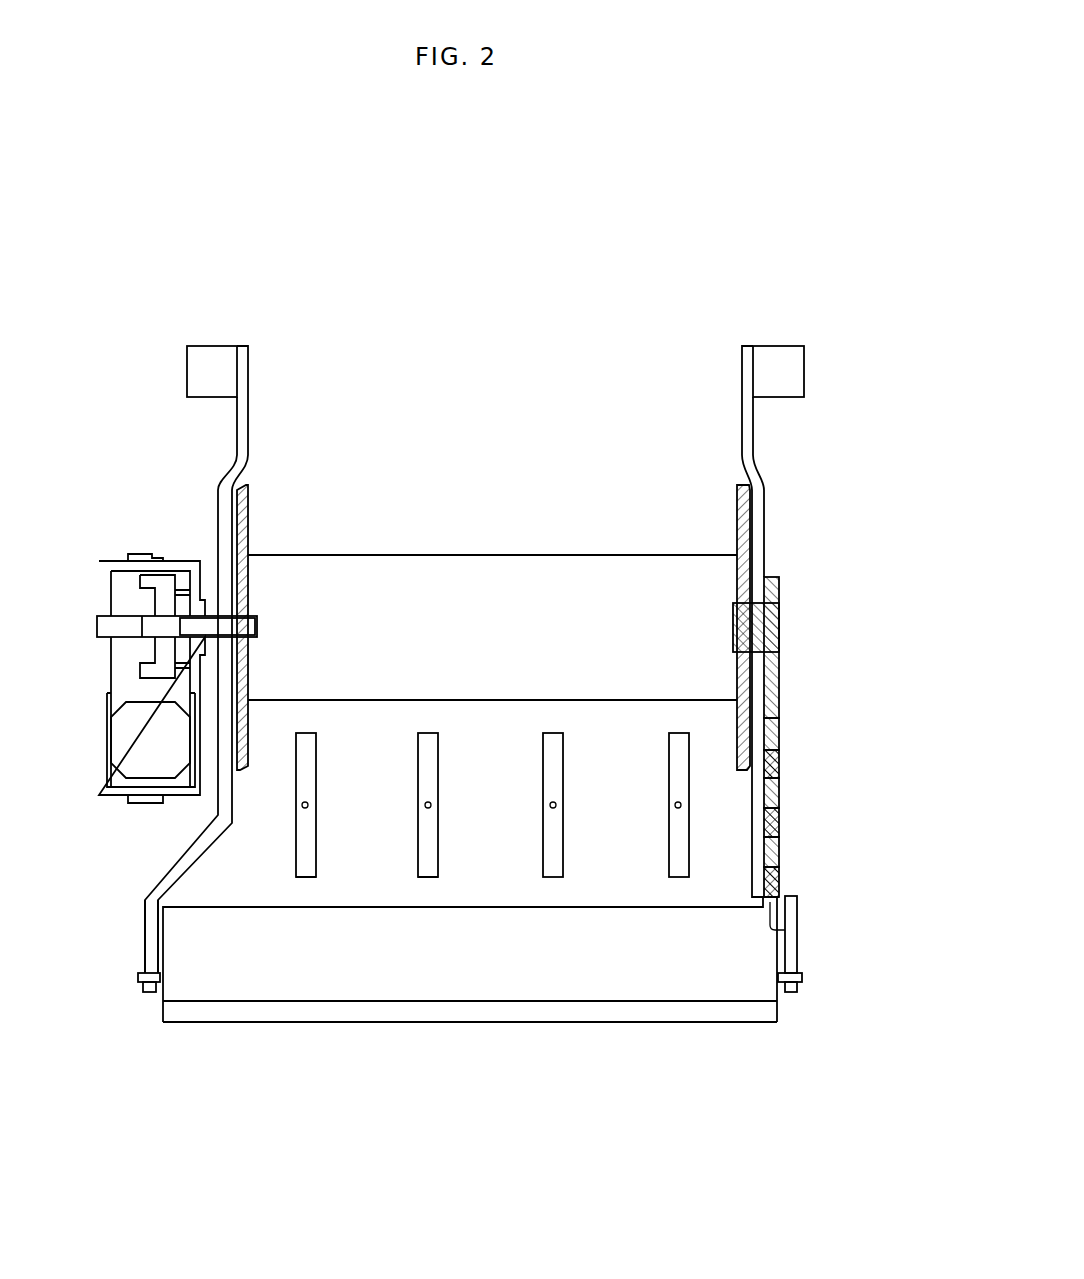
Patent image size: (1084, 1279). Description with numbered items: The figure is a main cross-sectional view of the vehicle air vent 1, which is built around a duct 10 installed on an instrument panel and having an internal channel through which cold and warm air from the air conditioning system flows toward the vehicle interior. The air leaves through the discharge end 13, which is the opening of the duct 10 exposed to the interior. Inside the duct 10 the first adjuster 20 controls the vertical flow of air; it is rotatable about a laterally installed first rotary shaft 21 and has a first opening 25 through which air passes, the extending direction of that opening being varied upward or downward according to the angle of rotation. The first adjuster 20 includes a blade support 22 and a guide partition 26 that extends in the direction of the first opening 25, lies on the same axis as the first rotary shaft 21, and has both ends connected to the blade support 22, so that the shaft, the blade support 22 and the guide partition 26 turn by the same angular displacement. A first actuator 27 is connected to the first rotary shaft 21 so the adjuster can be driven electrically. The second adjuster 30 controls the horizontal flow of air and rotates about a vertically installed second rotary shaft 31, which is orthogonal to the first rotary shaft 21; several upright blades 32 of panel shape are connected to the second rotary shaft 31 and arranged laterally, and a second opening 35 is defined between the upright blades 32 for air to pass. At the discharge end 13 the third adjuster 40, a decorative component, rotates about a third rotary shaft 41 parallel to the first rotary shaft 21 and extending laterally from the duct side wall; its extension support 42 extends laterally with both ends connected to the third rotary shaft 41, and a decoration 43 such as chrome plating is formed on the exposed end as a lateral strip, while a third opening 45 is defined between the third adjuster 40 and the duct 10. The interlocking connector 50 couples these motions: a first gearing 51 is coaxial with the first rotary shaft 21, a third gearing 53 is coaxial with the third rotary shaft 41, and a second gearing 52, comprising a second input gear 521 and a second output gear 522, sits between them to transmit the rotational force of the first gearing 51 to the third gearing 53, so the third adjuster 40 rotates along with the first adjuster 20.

The vehicle air vent 1 is at (640, 322).
The duct 10 is at (226, 423).
The discharge end 13 is at (148, 953).
The first adjuster 20 is at (628, 545).
The first rotary shaft 21 is at (245, 607).
The blade support 22 is at (742, 512).
The first opening 25 is at (477, 589).
The guide partition 26 is at (535, 575).
The first actuator 27 is at (130, 590).
The second adjuster 30 is at (382, 916).
The second rotary shaft 31 is at (424, 806).
The upright blade 32 is at (310, 870).
The second opening 35 is at (502, 813).
The third adjuster 40 is at (470, 1014).
The third rotary shaft 41 is at (139, 977).
The extension support 42 is at (310, 963).
The decoration 43 is at (692, 1008).
The third opening 45 is at (652, 958).
The interlocking connector 50 is at (847, 743).
The first gearing 51 is at (770, 688).
The second gearing 52 is at (847, 807).
The second input gear 521 is at (778, 783).
The second output gear 522 is at (880, 737).
The third gearing 53 is at (790, 930).